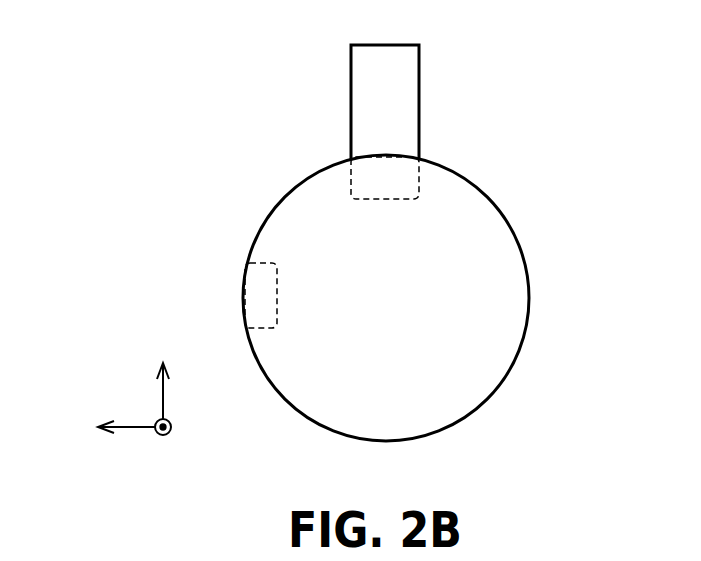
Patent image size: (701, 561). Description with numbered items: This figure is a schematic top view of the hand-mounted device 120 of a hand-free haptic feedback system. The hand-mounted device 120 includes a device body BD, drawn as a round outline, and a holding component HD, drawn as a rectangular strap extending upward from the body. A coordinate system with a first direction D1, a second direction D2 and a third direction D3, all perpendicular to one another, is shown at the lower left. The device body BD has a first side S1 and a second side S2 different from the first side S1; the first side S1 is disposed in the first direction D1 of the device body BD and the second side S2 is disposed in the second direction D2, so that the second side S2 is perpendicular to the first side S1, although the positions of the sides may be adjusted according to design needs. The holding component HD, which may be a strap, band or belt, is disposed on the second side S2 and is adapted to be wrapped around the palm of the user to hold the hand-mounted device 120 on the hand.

The hand-mounted device 120 is at (403, 245).
The device body BD is at (500, 268).
The holding component HD is at (372, 92).
The first side S1 is at (260, 263).
The second side S2 is at (420, 178).
The first direction D1 is at (111, 427).
The second direction D2 is at (163, 372).
The third direction D3 is at (185, 427).